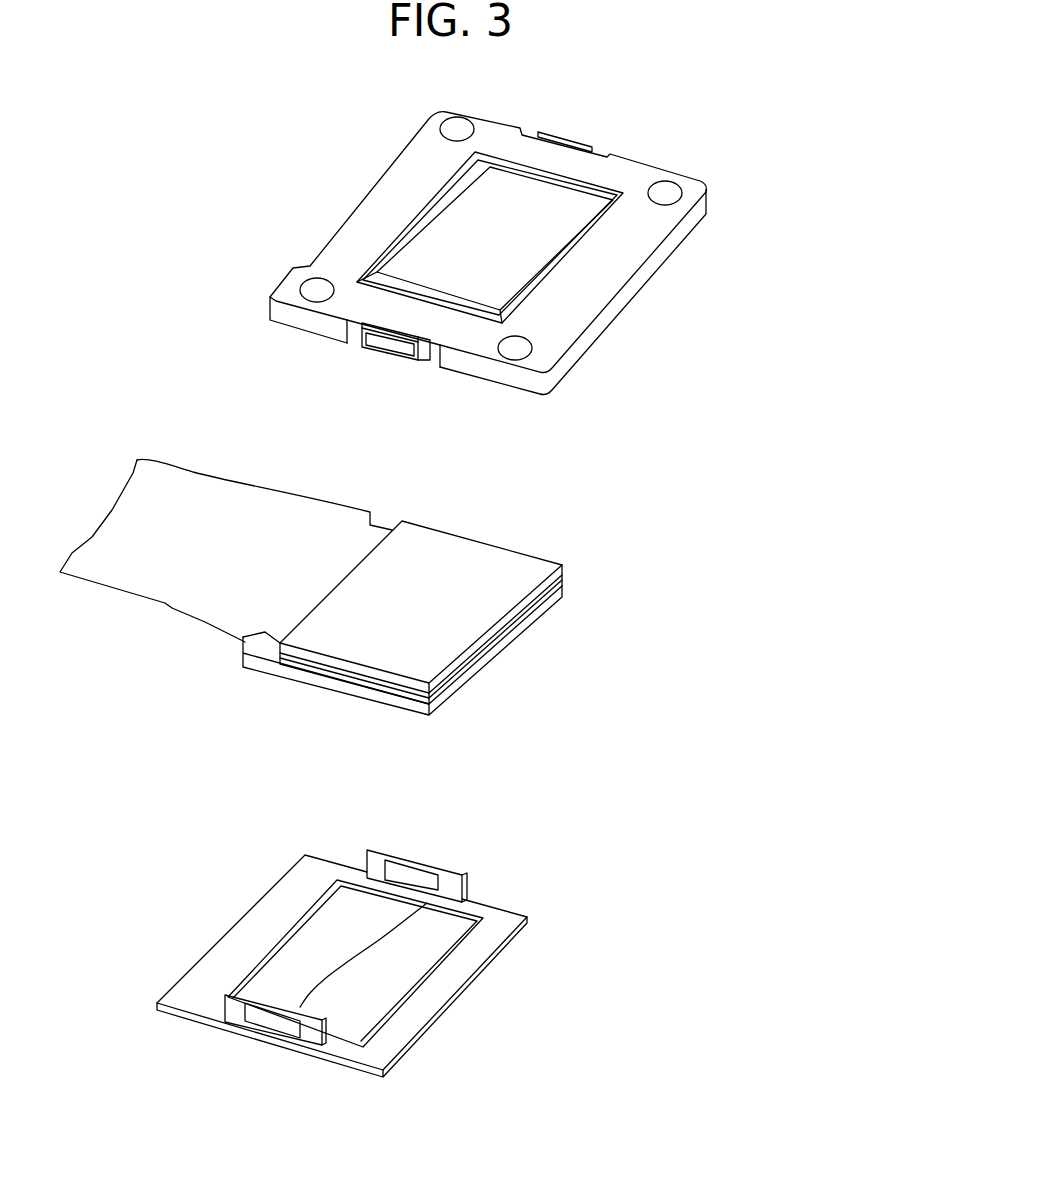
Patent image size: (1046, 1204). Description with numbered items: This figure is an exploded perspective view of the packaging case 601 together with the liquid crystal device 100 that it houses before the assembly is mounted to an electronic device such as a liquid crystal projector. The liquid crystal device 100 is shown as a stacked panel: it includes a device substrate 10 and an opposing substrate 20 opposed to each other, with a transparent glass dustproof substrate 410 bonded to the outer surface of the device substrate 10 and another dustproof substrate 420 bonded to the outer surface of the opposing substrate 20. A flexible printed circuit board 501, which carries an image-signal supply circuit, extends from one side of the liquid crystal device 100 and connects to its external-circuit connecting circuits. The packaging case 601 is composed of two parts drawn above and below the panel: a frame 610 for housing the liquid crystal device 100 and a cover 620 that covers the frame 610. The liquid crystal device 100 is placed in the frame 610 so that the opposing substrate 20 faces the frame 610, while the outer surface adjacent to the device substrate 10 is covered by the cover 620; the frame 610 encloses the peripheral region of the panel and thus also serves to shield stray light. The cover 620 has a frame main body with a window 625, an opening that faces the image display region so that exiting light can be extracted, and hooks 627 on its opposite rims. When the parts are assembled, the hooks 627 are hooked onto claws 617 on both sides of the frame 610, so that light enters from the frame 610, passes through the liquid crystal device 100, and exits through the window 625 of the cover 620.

The device substrate 10 is at (562, 567).
The opposing substrate 20 is at (560, 565).
The liquid crystal device 100 is at (723, 600).
The dustproof substrate 410 is at (564, 571).
The dustproof substrate 420 is at (477, 560).
The flexible printed circuit board 501 is at (193, 493).
The packaging case 601 is at (847, 667).
The frame 610 is at (645, 327).
The claw 617 is at (385, 352).
The cover 620 is at (533, 883).
The window 625 is at (295, 947).
The hook 627 is at (438, 885).